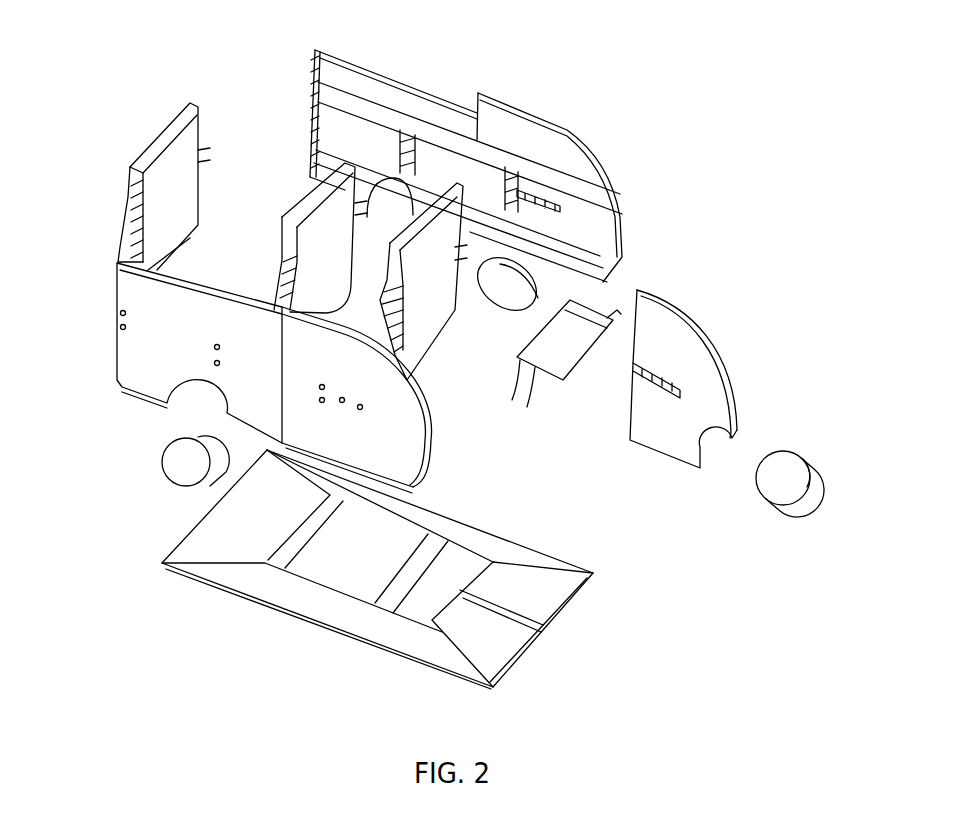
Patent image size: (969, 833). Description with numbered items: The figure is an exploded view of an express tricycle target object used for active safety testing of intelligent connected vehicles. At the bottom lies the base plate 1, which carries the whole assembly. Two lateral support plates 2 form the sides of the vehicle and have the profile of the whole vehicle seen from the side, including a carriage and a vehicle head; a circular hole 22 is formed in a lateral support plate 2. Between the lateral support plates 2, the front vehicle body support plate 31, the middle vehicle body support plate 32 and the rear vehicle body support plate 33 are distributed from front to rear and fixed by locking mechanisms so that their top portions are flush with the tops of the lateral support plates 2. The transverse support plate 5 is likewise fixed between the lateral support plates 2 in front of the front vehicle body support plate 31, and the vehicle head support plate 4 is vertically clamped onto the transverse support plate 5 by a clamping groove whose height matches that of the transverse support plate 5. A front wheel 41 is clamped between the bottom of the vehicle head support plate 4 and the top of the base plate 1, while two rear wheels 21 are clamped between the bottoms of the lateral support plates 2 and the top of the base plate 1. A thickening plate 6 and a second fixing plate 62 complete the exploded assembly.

The base plate 1 is at (327, 623).
The lateral support plate 2 is at (147, 377).
The rear wheel 21 is at (193, 463).
The circular hole 22 is at (117, 330).
The front vehicle body support plate 31 is at (423, 360).
The middle vehicle body support plate 32 is at (307, 197).
The rear vehicle body support plate 33 is at (167, 133).
The vehicle head support plate 4 is at (707, 343).
The front wheel 41 is at (797, 455).
The transverse support plate 5 is at (588, 305).
The thickening plate 6 is at (553, 177).
The second fixing plate 62 is at (313, 103).